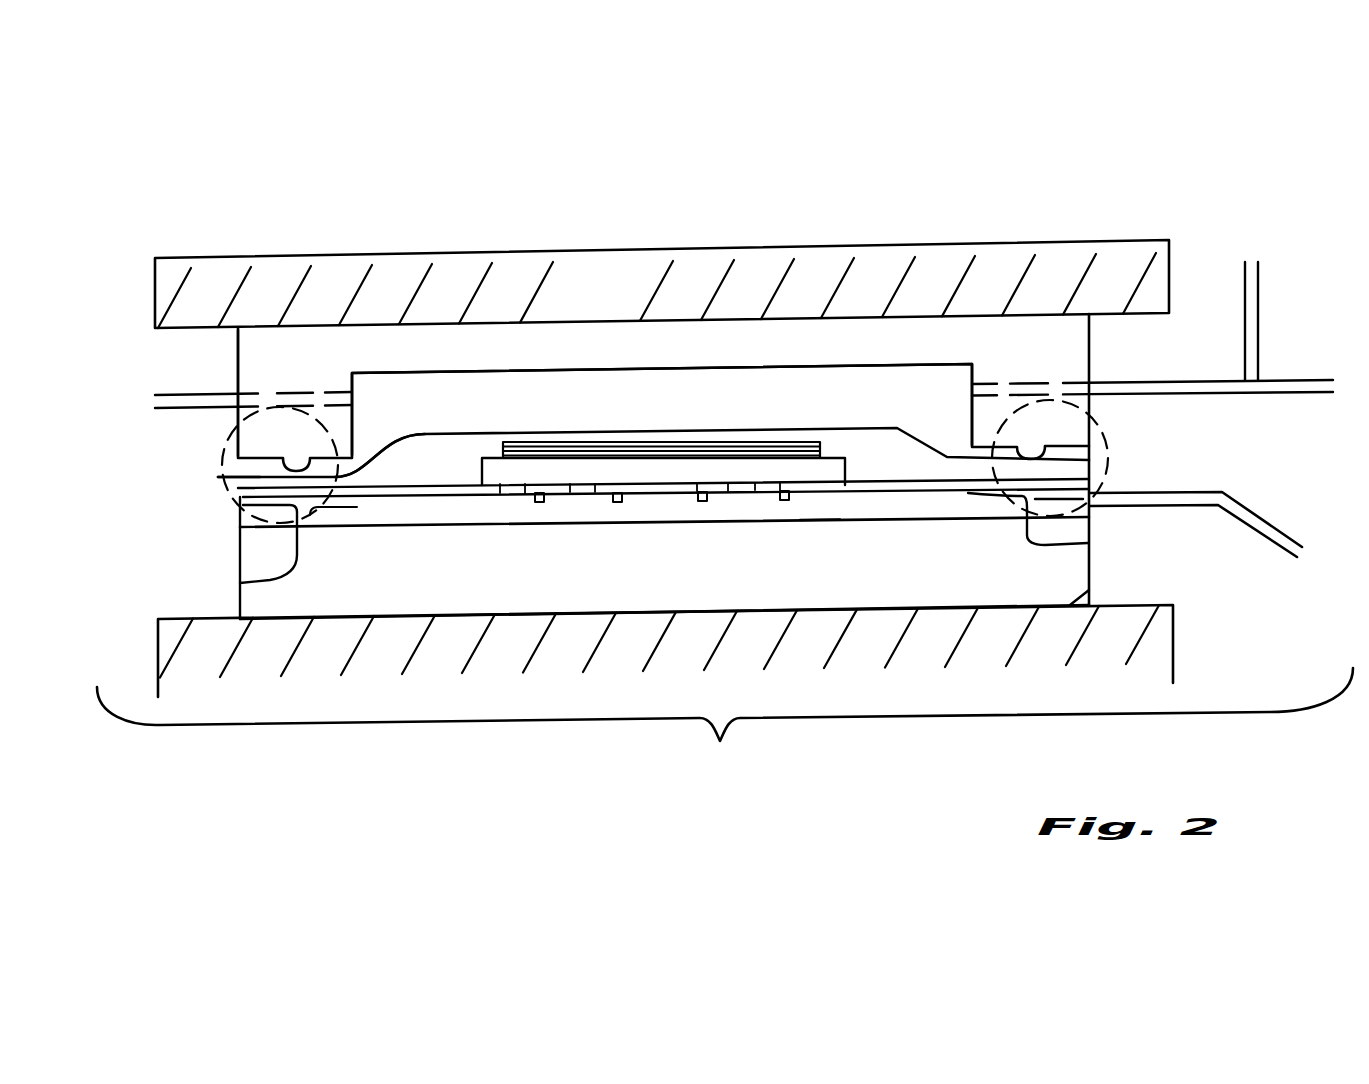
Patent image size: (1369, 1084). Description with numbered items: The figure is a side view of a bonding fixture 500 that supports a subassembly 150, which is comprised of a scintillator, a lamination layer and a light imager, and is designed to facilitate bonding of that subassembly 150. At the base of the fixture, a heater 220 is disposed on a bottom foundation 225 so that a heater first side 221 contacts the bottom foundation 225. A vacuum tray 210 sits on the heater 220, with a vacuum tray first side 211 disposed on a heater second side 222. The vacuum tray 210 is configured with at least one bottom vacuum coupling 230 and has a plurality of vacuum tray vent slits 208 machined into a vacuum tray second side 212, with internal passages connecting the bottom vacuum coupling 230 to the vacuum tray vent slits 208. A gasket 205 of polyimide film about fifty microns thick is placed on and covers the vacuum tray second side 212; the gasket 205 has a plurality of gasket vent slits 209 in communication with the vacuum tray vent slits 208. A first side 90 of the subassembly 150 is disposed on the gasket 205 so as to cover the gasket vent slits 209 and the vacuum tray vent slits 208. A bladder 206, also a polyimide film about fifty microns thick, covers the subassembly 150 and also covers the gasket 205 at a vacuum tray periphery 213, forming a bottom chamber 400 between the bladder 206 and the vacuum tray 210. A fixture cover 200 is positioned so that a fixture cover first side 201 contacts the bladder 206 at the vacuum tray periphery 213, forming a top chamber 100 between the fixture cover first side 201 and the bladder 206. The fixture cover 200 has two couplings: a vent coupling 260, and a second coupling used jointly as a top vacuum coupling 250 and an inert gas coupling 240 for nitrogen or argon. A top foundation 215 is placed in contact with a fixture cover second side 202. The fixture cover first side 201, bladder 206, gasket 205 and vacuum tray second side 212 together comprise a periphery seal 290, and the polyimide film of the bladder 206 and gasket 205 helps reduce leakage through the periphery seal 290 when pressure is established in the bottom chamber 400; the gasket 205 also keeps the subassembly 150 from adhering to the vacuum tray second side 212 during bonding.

The first side of subassembly 90 is at (845, 485).
The top chamber 100 is at (927, 392).
The subassembly 150 is at (470, 440).
The fixture cover 200 is at (797, 354).
The fixture cover first side 201 is at (352, 476).
The fixture cover second side 202 is at (256, 332).
The gasket 205 is at (230, 505).
The bladder 206 is at (220, 479).
The vacuum tray vent slits 208 is at (617, 498).
The gasket vent slits 209 is at (510, 490).
The vacuum tray 210 is at (907, 514).
The vacuum tray first side 211 is at (345, 528).
The vacuum tray second side 212 is at (478, 497).
The vacuum tray periphery 213 is at (240, 583).
The top foundation 215 is at (644, 308).
The heater 220 is at (825, 578).
The heater first side 221 is at (1090, 580).
The heater second side 222 is at (822, 520).
The bottom foundation 225 is at (525, 661).
The bottom vacuum coupling 230 is at (1300, 552).
The inert gas coupling 240 is at (1335, 382).
The top vacuum coupling 250 is at (1249, 260).
The vent coupling 260 is at (153, 393).
The periphery seal 290 is at (222, 445).
The bottom chamber 400 is at (380, 478).
The bonding fixture 500 is at (725, 733).